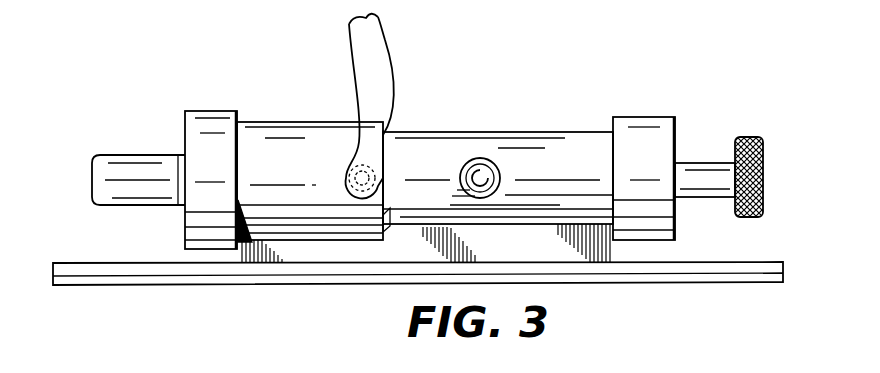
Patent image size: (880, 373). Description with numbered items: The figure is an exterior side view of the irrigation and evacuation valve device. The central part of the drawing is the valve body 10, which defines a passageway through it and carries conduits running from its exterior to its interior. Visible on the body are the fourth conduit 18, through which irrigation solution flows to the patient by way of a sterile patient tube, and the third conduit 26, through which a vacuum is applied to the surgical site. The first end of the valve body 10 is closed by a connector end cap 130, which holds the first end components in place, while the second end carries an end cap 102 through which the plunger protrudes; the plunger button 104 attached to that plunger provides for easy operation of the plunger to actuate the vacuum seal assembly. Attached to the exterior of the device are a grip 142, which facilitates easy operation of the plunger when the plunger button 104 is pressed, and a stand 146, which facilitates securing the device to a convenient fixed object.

The valve body 10 is at (544, 126).
The fourth conduit 18 is at (340, 135).
The third conduit 26 is at (461, 176).
The end cap 102 is at (655, 117).
The plunger button 104 is at (750, 137).
The connector end cap 130 is at (185, 121).
The grip 142 is at (412, 91).
The stand 146 is at (757, 262).